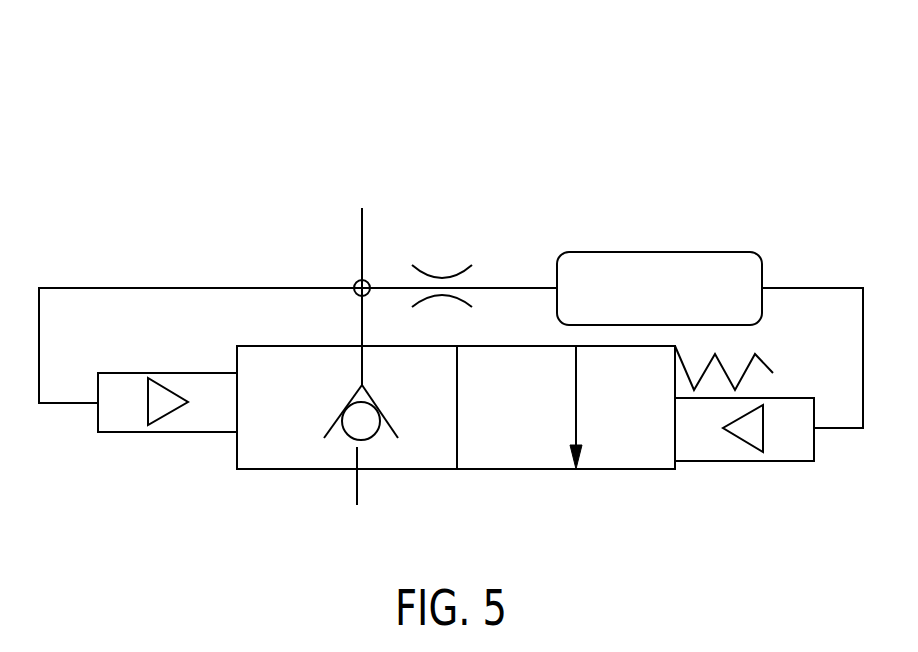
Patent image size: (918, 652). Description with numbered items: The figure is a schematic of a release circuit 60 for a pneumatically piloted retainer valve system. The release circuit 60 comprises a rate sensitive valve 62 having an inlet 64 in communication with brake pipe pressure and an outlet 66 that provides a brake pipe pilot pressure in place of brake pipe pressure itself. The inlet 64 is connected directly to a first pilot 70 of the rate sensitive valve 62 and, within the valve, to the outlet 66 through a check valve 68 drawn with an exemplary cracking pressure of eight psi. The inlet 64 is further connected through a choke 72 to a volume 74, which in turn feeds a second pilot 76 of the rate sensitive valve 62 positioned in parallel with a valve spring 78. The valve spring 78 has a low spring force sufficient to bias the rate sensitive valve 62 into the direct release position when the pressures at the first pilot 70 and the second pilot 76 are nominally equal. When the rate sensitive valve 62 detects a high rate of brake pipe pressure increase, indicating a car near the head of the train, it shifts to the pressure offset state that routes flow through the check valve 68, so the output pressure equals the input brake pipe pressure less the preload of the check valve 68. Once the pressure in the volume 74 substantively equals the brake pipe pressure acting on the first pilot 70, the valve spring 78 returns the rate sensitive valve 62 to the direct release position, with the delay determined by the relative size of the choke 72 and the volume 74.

The release circuit 60 is at (441, 72).
The rate sensitive valve 62 is at (632, 469).
The inlet 64 is at (362, 242).
The outlet 66 is at (355, 485).
The check valve 68 is at (353, 397).
The first pilot 70 is at (192, 432).
The choke 72 is at (453, 275).
The volume 74 is at (675, 252).
The second pilot 76 is at (777, 461).
The valve spring 78 is at (760, 360).